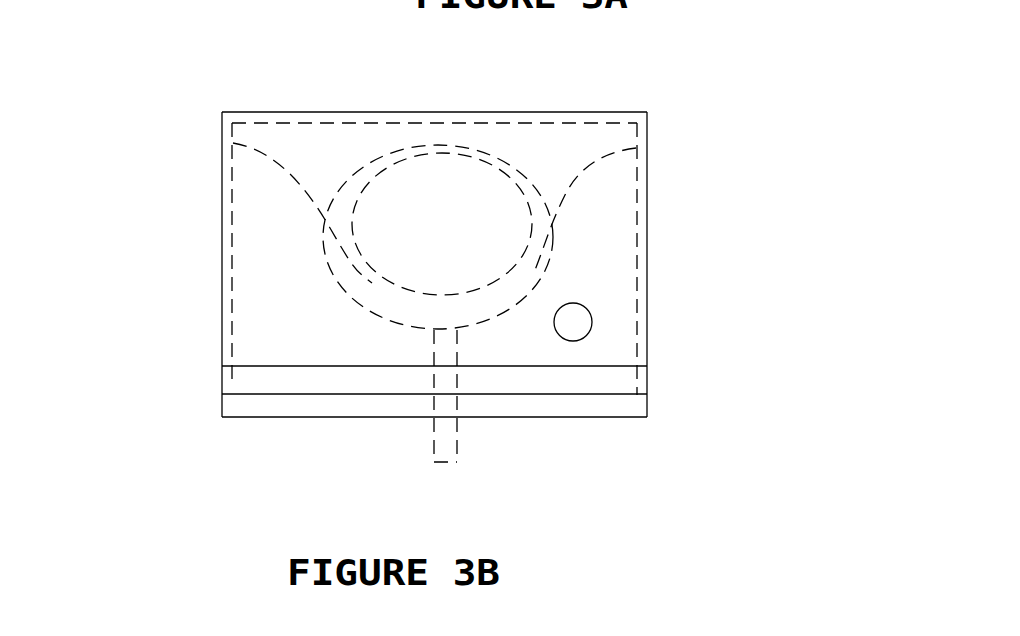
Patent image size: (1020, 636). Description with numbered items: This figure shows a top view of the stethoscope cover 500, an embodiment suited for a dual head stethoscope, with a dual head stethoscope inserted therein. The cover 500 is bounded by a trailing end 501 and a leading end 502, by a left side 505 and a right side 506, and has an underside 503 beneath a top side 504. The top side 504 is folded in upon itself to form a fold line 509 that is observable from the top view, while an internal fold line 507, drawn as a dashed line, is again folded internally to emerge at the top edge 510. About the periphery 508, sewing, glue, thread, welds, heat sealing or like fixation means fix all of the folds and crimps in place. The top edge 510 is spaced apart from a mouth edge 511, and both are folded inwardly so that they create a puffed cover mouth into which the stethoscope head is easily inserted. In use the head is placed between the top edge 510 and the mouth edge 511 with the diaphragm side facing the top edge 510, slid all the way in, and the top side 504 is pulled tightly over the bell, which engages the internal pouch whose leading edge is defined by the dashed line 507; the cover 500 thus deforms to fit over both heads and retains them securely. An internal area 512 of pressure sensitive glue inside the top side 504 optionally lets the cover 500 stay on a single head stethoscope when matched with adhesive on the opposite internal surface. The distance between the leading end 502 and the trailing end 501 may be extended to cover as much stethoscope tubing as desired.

The stethoscope cover 500 is at (487, 269).
The trailing end 501 is at (362, 61).
The leading end 502 is at (353, 439).
The underside 503 is at (362, 78).
The top side 504 is at (310, 303).
The left side 505 is at (357, 259).
The right side 506 is at (698, 228).
The internal fold line 507 is at (722, 193).
The periphery 508 is at (218, 195).
The fold line 509 is at (554, 388).
The top edge 510 is at (732, 298).
The mouth edge 511 is at (563, 466).
The internal area of pressure sensitive glue 512 is at (697, 304).